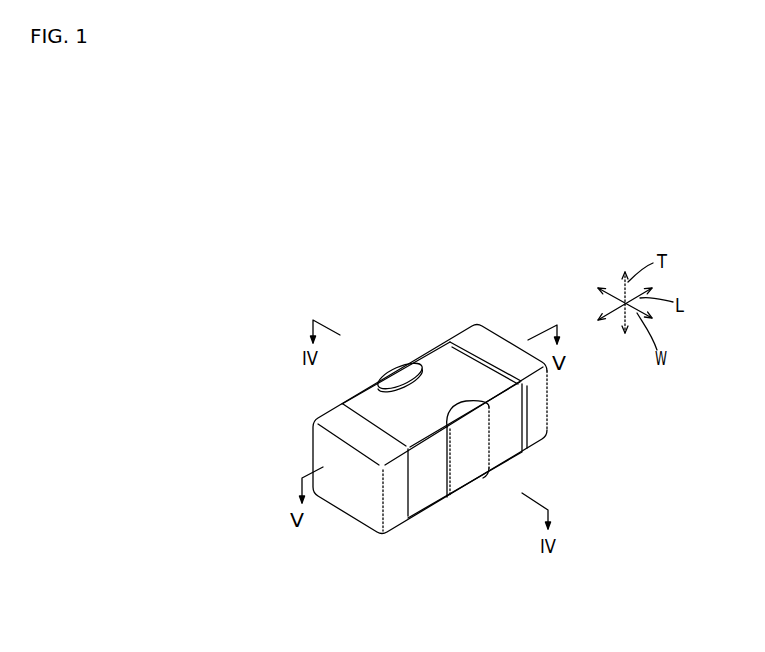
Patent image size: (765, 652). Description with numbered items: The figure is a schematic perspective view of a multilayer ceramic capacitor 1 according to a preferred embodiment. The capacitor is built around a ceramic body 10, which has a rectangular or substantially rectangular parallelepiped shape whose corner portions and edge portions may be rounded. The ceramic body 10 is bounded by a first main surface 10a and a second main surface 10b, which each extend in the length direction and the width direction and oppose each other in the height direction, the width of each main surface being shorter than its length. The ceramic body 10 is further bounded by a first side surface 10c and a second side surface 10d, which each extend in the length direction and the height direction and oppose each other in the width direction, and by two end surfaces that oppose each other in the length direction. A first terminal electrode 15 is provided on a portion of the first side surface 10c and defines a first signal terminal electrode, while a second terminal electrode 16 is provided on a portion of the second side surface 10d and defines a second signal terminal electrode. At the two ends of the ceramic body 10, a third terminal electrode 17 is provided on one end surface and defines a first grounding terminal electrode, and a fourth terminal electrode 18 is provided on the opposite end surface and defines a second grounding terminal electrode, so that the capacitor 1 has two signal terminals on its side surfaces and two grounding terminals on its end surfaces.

The multilayer ceramic capacitor 1 is at (489, 308).
The ceramic body 10 is at (508, 458).
The first main surface 10a is at (435, 370).
The second main surface 10b is at (421, 514).
The first side surface 10c is at (370, 396).
The second side surface 10d is at (428, 494).
The first terminal electrode 15 is at (397, 366).
The second terminal electrode 16 is at (472, 487).
The third terminal electrode 17 is at (346, 514).
The fourth terminal electrode 18 is at (549, 409).